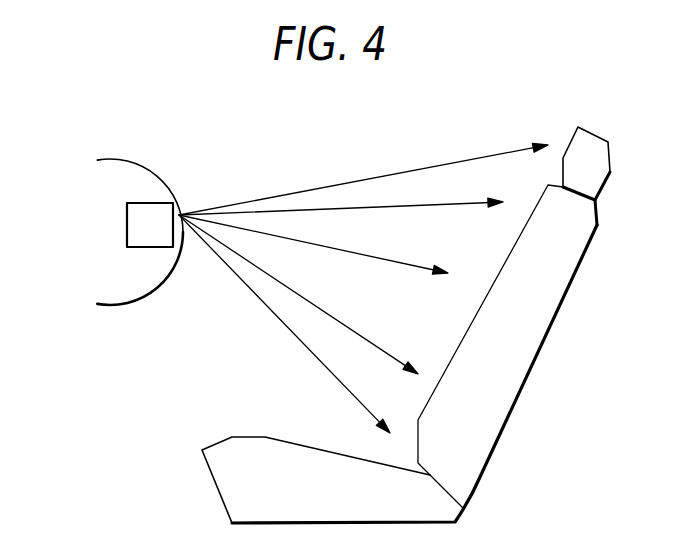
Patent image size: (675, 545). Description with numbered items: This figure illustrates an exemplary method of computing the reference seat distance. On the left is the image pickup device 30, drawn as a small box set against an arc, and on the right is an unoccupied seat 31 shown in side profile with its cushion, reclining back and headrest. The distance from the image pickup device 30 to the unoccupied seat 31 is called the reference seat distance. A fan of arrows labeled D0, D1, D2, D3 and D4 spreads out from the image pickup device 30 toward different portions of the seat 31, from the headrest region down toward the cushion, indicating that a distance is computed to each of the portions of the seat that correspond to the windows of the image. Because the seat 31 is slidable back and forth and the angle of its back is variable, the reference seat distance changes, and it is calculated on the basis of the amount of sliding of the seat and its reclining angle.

The image pickup device 30 is at (127, 227).
The unoccupied seat 31 is at (515, 470).
The detection direction D0 is at (363, 169).
The detection direction D1 is at (341, 196).
The detection direction D2 is at (313, 244).
The detection direction D3 is at (299, 294).
The detection direction D4 is at (284, 324).